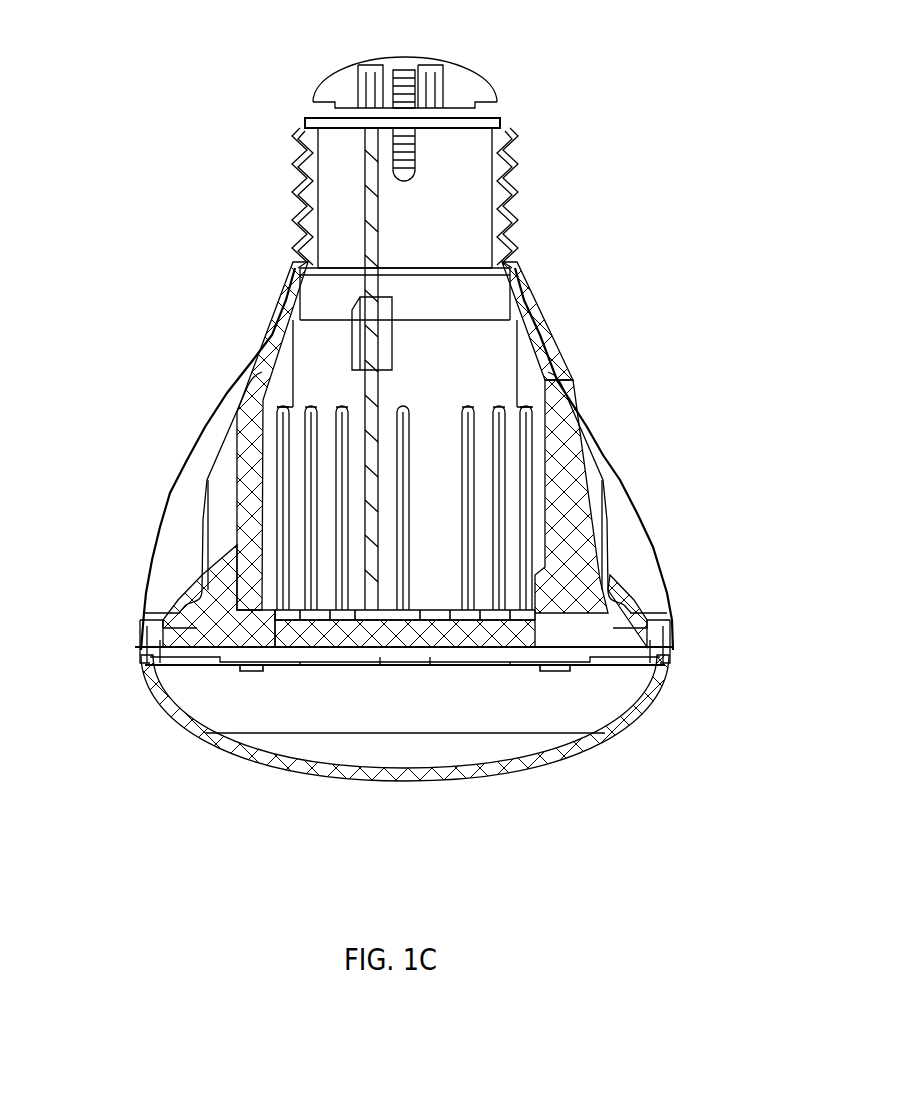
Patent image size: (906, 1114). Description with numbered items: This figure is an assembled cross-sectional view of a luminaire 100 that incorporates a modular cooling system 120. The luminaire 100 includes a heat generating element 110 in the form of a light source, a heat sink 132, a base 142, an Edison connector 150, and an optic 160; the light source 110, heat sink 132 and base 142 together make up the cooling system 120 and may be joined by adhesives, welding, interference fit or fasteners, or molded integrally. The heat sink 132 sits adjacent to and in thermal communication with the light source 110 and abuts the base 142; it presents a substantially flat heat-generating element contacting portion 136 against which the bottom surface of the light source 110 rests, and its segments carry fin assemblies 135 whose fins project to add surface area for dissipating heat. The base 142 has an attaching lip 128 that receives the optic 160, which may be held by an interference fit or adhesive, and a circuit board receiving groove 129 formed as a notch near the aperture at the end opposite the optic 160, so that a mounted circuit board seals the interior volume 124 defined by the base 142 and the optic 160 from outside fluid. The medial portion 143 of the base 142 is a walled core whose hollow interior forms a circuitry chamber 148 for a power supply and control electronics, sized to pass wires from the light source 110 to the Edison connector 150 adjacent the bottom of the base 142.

The luminaire 100 is at (237, 62).
The heat generating element 110 is at (547, 668).
The modular cooling system 120 is at (623, 340).
The interior volume 124 is at (477, 707).
The attaching lip 128 is at (157, 648).
The circuit board receiving groove 129 is at (158, 663).
The heat sink 132 is at (562, 588).
The fin assembly 135 is at (250, 393).
The heat-generating element contacting portion 136 is at (260, 650).
The base 142 is at (283, 577).
The medial portion 143 is at (520, 340).
The circuitry chamber 148 is at (320, 352).
The Edison connector 150 is at (298, 137).
The optic 160 is at (510, 770).